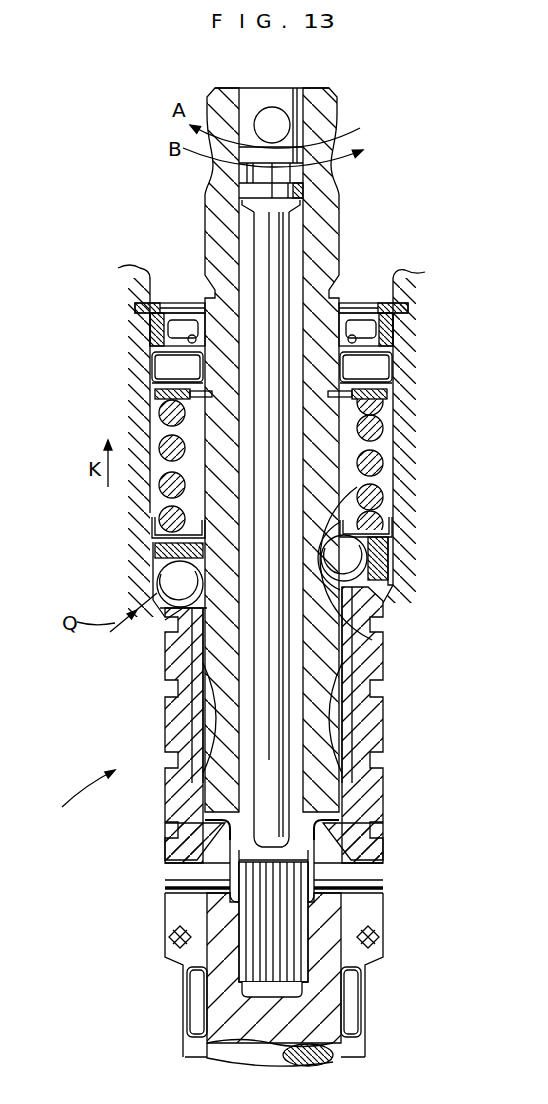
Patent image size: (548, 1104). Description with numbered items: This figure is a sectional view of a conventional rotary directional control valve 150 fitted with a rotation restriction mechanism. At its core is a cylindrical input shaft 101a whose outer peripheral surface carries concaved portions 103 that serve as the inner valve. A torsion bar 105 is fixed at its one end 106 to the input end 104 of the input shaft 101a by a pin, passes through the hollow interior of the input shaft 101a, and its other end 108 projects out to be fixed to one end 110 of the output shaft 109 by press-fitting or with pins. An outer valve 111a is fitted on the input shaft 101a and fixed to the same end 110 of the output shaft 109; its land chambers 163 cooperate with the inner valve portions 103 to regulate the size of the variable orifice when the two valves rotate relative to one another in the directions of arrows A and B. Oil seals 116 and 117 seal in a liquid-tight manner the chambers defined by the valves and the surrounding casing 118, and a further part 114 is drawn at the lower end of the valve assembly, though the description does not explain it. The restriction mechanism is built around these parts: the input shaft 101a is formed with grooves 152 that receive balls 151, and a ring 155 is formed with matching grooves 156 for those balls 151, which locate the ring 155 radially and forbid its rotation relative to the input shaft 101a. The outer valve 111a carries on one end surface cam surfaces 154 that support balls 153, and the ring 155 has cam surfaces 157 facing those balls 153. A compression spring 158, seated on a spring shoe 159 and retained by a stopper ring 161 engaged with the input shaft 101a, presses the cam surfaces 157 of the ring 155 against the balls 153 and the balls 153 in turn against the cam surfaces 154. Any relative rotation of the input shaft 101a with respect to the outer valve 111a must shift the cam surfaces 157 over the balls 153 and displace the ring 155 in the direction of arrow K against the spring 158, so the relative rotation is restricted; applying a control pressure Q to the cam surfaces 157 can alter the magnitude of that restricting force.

The input shaft 101a is at (322, 228).
The concaved portions (inner valve portions) 103 is at (213, 710).
The input end 104 is at (317, 112).
The torsion bar 105 is at (275, 262).
The one end of torsion bar 106 is at (299, 89).
The other end of torsion bar 108 is at (293, 960).
The output shaft 109 is at (210, 1048).
The one end of output shaft 110 is at (213, 1005).
The outer valve 111a is at (165, 843).
The plate 114 is at (165, 885).
The oil seal 116 is at (400, 320).
The oil seal 117 is at (379, 940).
The casing 118 is at (143, 357).
The rotary directional control valve 150 is at (65, 796).
The balls 151 is at (387, 603).
The grooves 152 is at (396, 482).
The balls 153 is at (153, 593).
The cam surfaces 154 is at (147, 617).
The ring 155 is at (150, 550).
The grooves 156 is at (388, 576).
The cam surfaces 157 is at (153, 565).
The spring 158 is at (380, 432).
The spring shoe 159 is at (378, 393).
The stopper ring 161 is at (348, 382).
The land chambers 163 is at (200, 742).